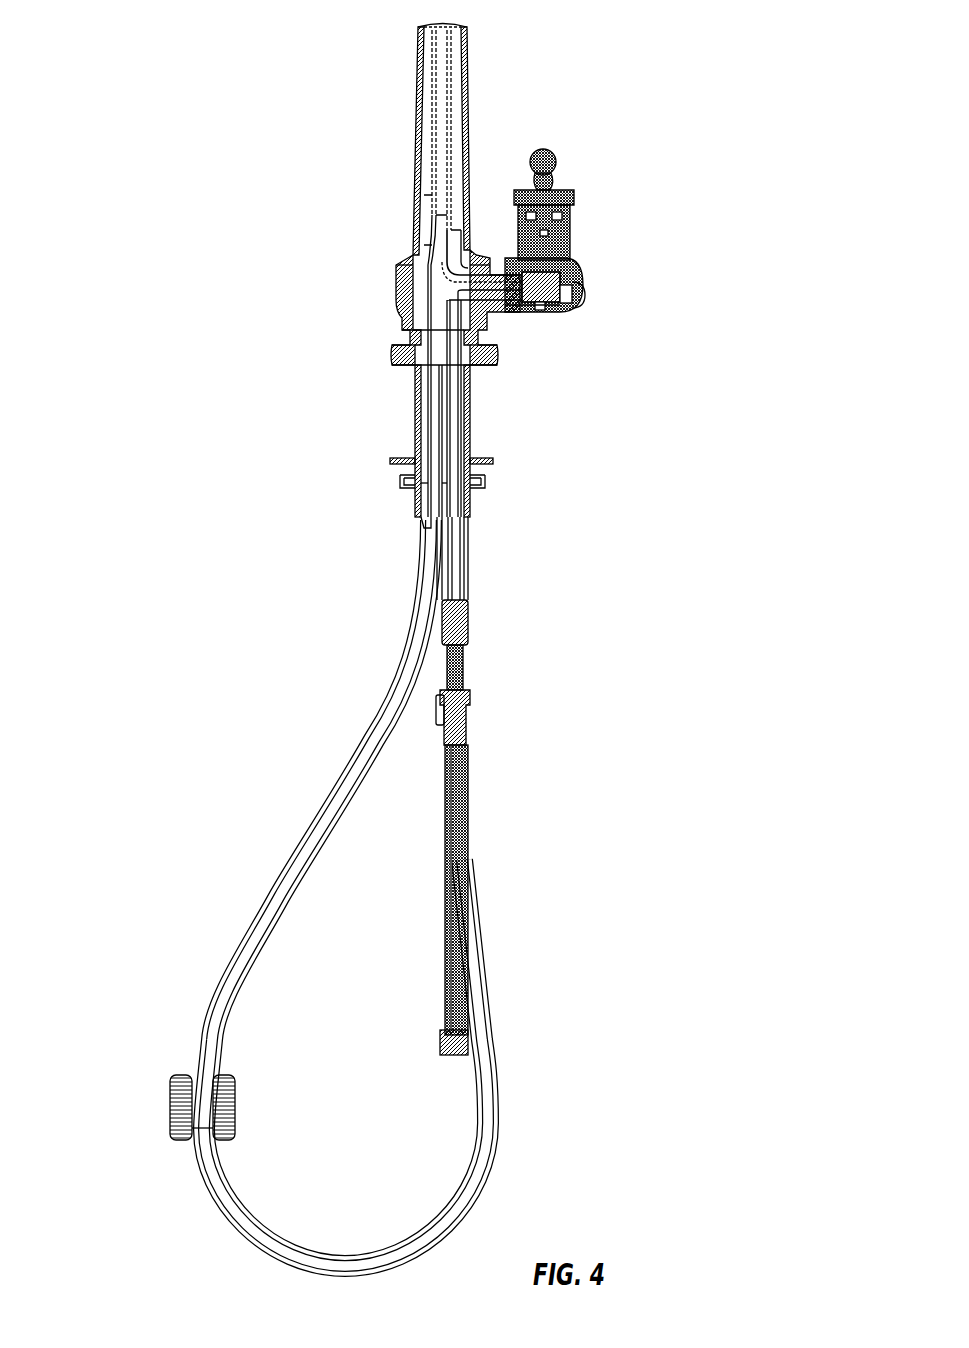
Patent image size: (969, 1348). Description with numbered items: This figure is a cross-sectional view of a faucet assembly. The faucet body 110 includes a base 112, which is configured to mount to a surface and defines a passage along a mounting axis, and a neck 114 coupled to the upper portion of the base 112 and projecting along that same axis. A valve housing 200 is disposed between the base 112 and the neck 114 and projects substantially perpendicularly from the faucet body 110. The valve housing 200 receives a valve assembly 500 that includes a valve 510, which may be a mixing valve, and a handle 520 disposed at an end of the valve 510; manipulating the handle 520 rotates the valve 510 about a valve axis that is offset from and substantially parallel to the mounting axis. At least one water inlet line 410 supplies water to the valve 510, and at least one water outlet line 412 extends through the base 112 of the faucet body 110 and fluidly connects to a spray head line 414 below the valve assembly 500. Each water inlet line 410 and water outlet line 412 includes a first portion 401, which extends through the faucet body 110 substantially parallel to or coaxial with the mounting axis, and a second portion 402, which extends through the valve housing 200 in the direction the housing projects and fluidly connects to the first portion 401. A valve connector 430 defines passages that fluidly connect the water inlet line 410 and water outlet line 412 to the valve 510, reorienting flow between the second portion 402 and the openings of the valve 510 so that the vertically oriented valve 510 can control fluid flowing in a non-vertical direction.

The faucet body 110 is at (288, 223).
The base 112 is at (393, 354).
The neck 114 is at (415, 165).
The valve housing 200 is at (585, 282).
The first portion 401 is at (468, 441).
The second portion 402 is at (528, 312).
The water inlet line 410 is at (455, 412).
The water outlet line 412 is at (452, 298).
The spray head line 414 is at (268, 897).
The valve connector 430 is at (578, 300).
The valve assembly 500 is at (628, 140).
The valve 510 is at (572, 226).
The handle 520 is at (548, 150).